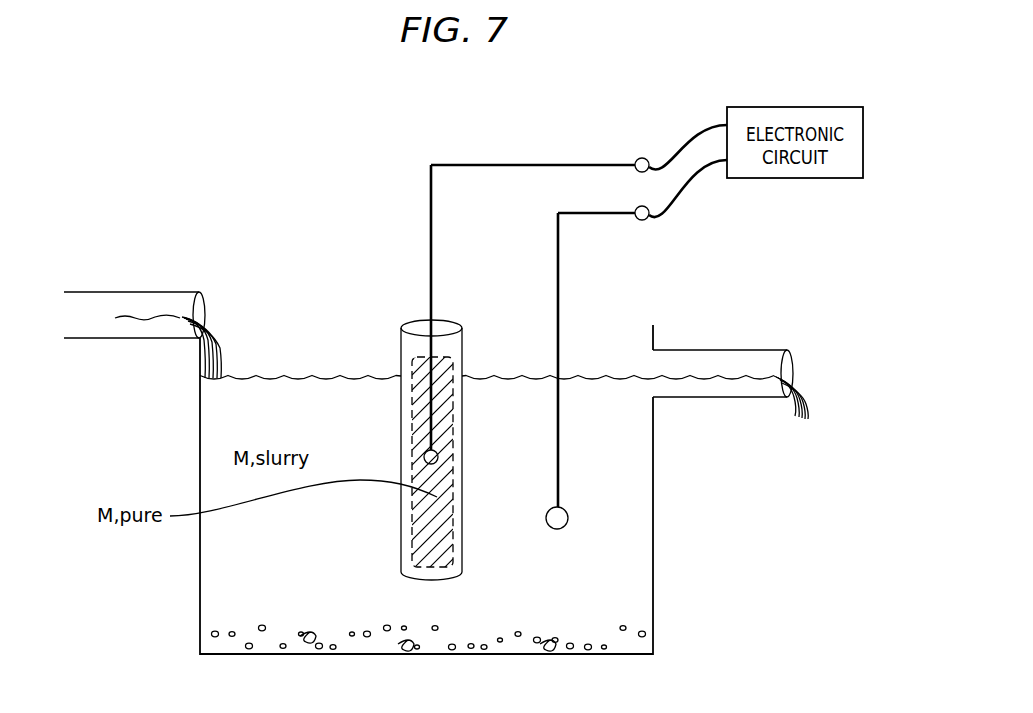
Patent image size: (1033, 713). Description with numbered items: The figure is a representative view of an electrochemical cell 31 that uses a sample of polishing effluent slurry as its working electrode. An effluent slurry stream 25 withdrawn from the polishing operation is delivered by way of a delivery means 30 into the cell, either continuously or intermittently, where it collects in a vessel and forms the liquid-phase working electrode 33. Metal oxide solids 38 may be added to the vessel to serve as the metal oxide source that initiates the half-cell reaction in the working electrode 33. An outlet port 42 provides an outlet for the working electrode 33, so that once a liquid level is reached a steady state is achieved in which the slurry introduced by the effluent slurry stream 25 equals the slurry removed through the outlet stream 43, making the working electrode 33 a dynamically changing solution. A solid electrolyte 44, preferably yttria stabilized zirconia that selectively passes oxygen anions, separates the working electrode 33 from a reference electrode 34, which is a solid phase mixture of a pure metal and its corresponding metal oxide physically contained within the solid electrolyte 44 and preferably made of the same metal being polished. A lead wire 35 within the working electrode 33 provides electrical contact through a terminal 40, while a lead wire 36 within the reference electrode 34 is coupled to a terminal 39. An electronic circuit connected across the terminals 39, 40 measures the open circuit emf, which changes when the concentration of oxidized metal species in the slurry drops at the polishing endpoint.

The effluent slurry stream 25 is at (217, 342).
The delivery means 30 is at (104, 328).
The electrochemical cell 31 is at (340, 280).
The working electrode 33 is at (348, 548).
The reference electrode 34 is at (442, 533).
The lead wire 35 is at (560, 519).
The lead wire 36 is at (426, 453).
The metal oxide solids 38 is at (304, 636).
The terminal 39 is at (645, 157).
The terminal 40 is at (645, 221).
The outlet port 42 is at (790, 366).
The outlet stream 43 is at (806, 402).
The solid electrolyte 44 is at (457, 433).